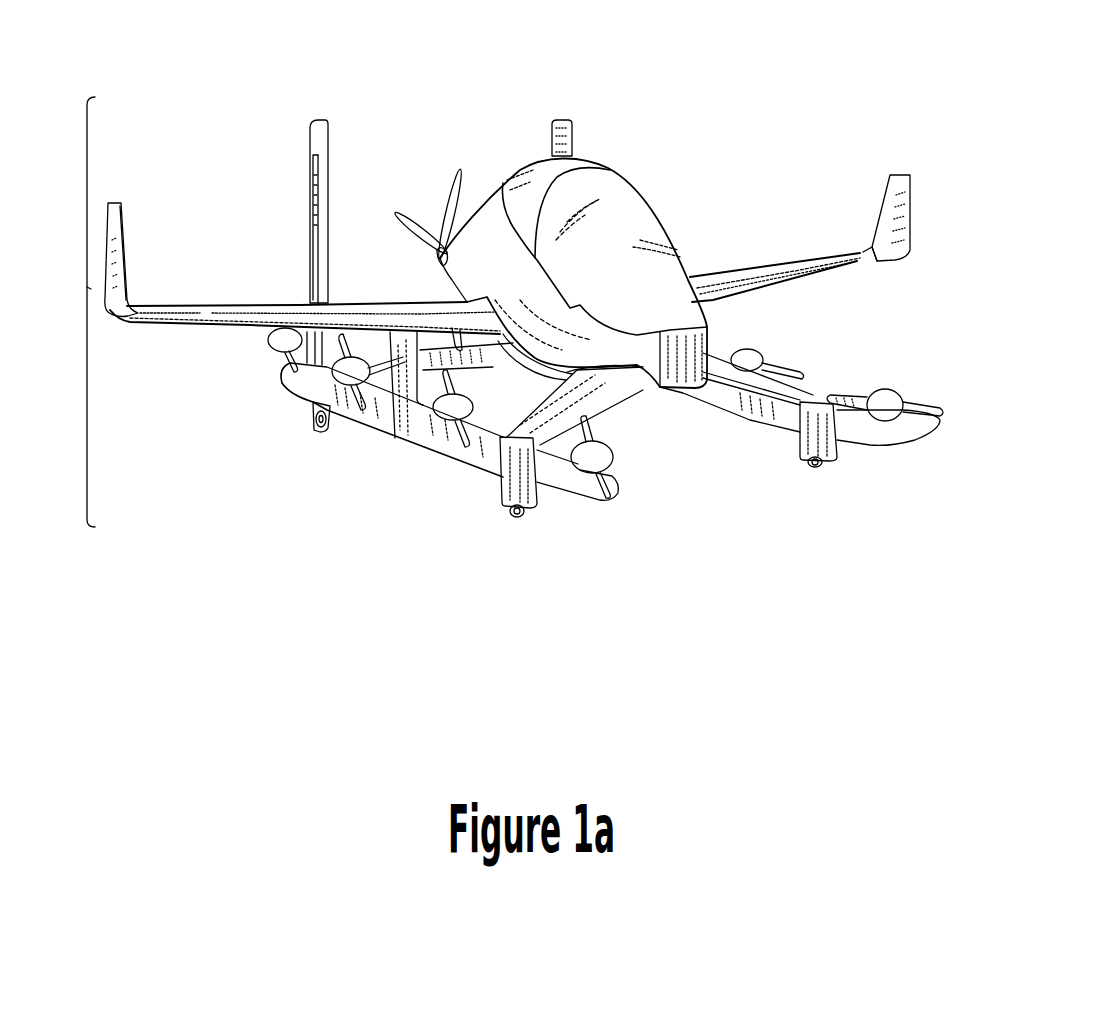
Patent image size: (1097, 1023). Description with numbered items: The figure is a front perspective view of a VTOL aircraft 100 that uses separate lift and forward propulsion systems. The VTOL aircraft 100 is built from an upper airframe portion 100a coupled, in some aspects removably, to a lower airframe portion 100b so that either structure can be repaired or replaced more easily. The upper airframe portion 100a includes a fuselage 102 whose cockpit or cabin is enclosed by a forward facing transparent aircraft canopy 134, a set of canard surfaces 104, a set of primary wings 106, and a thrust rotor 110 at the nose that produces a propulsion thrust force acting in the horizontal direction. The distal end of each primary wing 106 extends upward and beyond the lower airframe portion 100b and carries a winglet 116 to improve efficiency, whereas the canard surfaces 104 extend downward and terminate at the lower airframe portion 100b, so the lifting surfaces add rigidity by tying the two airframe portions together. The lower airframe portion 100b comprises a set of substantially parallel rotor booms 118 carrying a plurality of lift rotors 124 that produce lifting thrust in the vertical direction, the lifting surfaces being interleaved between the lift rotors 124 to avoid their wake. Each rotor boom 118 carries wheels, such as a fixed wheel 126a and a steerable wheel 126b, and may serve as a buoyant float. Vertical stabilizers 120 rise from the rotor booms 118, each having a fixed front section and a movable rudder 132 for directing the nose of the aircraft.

The VTOL aircraft 100 is at (862, 27).
The upper airframe portion 100a is at (87, 206).
The lower airframe portion 100b is at (87, 420).
The fuselage 102 is at (476, 205).
The canard surface 104 is at (531, 415).
The primary wing 106 is at (200, 305).
The thrust rotor 110 is at (373, 222).
The winglet 116 is at (914, 203).
The rotor boom 118 is at (427, 453).
The vertical stabilizer 120 is at (318, 118).
The lift rotor 124 is at (943, 377).
The fixed wheel 126a is at (517, 527).
The steerable wheel 126b is at (319, 437).
The rudder 132 is at (301, 206).
The aircraft canopy 134 is at (636, 196).